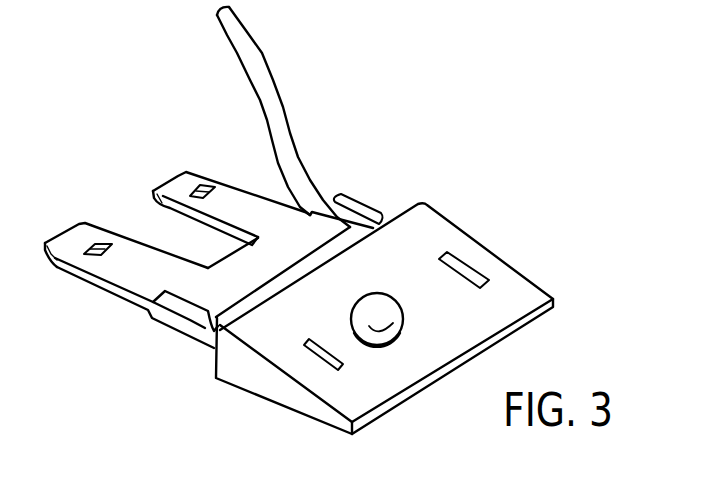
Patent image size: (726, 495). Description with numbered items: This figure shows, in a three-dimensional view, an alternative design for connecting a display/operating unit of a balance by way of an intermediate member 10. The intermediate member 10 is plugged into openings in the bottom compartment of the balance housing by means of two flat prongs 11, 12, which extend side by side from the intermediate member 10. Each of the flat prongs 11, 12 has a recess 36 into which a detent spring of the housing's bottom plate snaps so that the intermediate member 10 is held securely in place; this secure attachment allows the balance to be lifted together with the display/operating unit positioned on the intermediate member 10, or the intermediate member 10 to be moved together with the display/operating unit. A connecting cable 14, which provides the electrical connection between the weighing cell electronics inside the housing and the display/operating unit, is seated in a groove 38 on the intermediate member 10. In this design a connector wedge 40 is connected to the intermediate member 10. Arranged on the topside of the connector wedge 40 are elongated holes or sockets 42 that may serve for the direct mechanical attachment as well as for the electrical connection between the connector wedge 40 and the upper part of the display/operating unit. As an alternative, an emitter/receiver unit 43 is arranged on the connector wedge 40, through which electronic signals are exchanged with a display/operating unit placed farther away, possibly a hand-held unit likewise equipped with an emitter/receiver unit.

The intermediate member 10 is at (163, 343).
The flat prong 11 is at (137, 270).
The flat prong 12 is at (235, 203).
The connecting cable 14 is at (289, 138).
The recesses 36 is at (94, 243).
The groove 38 is at (346, 200).
The connector wedge 40 is at (425, 230).
The elongated holes or sockets 42 is at (464, 267).
The emitter/receiver unit 43 is at (390, 313).